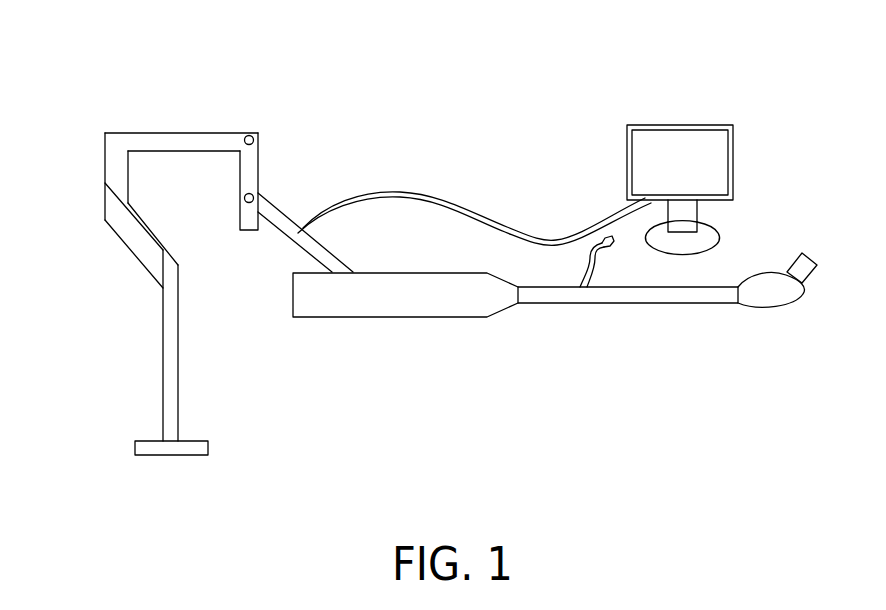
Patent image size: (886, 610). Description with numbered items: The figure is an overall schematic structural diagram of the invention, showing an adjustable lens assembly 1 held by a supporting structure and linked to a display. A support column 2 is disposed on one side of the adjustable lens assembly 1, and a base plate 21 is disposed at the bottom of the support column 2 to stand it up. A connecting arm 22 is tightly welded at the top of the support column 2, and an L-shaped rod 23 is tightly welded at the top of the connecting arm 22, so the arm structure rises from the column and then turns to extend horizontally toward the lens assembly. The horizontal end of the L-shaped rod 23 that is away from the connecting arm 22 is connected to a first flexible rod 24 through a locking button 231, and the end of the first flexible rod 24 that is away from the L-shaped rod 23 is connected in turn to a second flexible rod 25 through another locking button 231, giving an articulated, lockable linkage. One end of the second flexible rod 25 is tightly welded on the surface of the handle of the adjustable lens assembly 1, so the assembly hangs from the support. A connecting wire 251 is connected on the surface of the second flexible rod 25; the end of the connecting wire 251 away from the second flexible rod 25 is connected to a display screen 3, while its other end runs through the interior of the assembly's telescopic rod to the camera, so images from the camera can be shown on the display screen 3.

The adjustable lens assembly 1 is at (555, 322).
The support column 2 is at (435, 231).
The base plate 21 is at (110, 377).
The connecting arm 22 is at (95, 210).
The L-shaped rod 23 is at (137, 96).
The locking button 231 is at (314, 94).
The first flexible rod 24 is at (302, 157).
The second flexible rod 25 is at (339, 203).
The connecting wire 251 is at (578, 126).
The display screen 3 is at (726, 154).